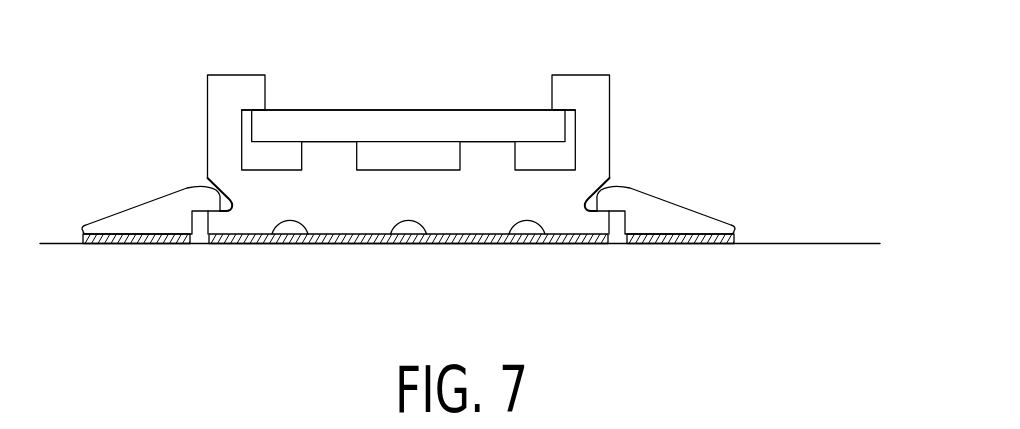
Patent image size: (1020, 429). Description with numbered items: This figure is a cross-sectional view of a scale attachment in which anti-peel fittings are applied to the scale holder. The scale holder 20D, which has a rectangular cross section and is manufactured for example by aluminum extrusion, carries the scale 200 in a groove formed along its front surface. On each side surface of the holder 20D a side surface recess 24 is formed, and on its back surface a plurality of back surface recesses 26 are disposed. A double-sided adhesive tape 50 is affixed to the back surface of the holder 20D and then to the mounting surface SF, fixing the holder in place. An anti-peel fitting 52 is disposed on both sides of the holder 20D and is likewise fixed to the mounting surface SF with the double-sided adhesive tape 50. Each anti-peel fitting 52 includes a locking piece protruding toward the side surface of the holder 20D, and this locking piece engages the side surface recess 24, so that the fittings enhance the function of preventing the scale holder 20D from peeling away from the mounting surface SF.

The scale 200 is at (408, 109).
The scale holder 20D is at (610, 97).
The side surface recess 24 is at (207, 181).
The anti-peel fitting 52 is at (133, 205).
The double-sided adhesive tape 50 is at (552, 247).
The back surface recess 26 is at (400, 223).
The mounting surface SF is at (810, 243).